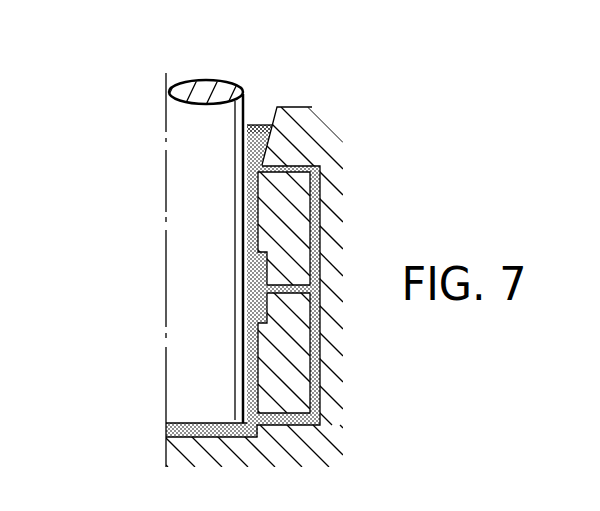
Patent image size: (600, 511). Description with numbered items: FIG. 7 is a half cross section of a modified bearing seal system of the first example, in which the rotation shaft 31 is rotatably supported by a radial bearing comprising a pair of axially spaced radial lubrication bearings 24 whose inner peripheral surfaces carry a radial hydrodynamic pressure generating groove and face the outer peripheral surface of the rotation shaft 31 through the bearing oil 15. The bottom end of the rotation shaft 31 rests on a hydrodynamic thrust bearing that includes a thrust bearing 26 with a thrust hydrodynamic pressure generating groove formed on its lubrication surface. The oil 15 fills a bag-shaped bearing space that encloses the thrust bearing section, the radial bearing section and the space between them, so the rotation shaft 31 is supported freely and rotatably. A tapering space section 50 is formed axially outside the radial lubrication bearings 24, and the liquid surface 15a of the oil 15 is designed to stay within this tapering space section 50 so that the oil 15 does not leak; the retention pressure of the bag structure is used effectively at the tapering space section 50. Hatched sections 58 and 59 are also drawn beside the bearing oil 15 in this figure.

The rotation shaft 31 is at (212, 140).
The liquid surface 15a is at (257, 126).
The tapering space section 50 is at (266, 133).
The bearing oil 15 is at (247, 281).
The radial lubrication bearing 24 is at (272, 190).
The upper insert 58 is at (293, 284).
The lower insert 59 is at (312, 362).
The thrust bearing 26 is at (185, 442).